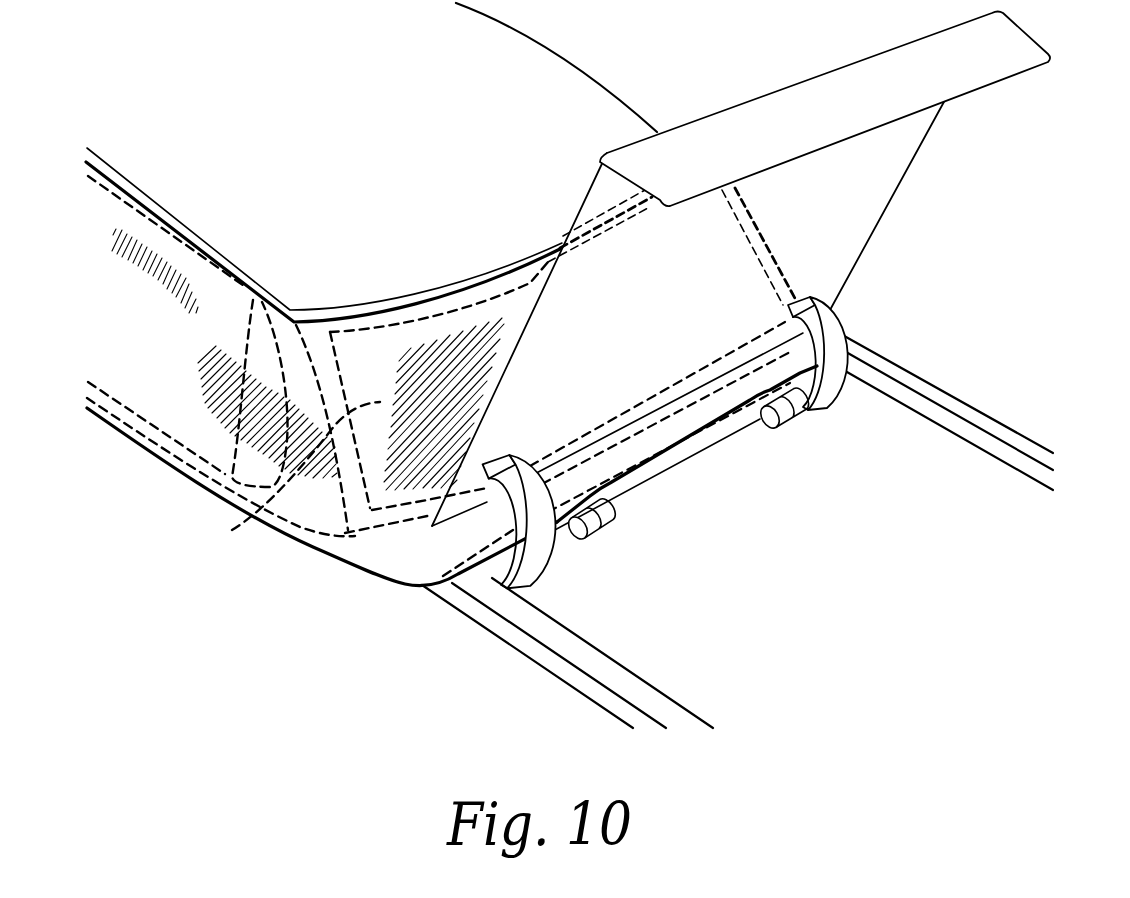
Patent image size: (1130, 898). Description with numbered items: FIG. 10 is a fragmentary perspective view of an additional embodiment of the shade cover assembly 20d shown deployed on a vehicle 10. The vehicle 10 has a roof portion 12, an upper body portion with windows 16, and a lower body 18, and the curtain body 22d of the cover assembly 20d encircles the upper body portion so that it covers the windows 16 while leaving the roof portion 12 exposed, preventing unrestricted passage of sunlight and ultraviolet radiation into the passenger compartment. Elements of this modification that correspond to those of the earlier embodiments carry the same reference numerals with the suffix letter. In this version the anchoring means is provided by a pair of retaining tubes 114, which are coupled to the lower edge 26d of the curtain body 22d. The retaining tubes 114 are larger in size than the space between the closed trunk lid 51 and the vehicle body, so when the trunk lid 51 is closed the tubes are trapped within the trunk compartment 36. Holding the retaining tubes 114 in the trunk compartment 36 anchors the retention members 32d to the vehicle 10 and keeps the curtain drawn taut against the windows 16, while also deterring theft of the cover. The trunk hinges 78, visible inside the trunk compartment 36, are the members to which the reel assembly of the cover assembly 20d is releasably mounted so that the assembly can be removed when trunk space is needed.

The vehicle 10 is at (570, 63).
The roof portion 12 is at (365, 137).
The windows 16 is at (232, 530).
The lower body 18 is at (562, 650).
The shade cover assembly 20d is at (311, 550).
The curtain body 22d is at (176, 415).
The lower edge 26d is at (681, 448).
The retention members 32d is at (598, 528).
The trunk compartment 36 is at (1003, 465).
The trunk lid 51 is at (898, 197).
The hinges 78 is at (840, 313).
The retaining tubes 114 is at (580, 542).